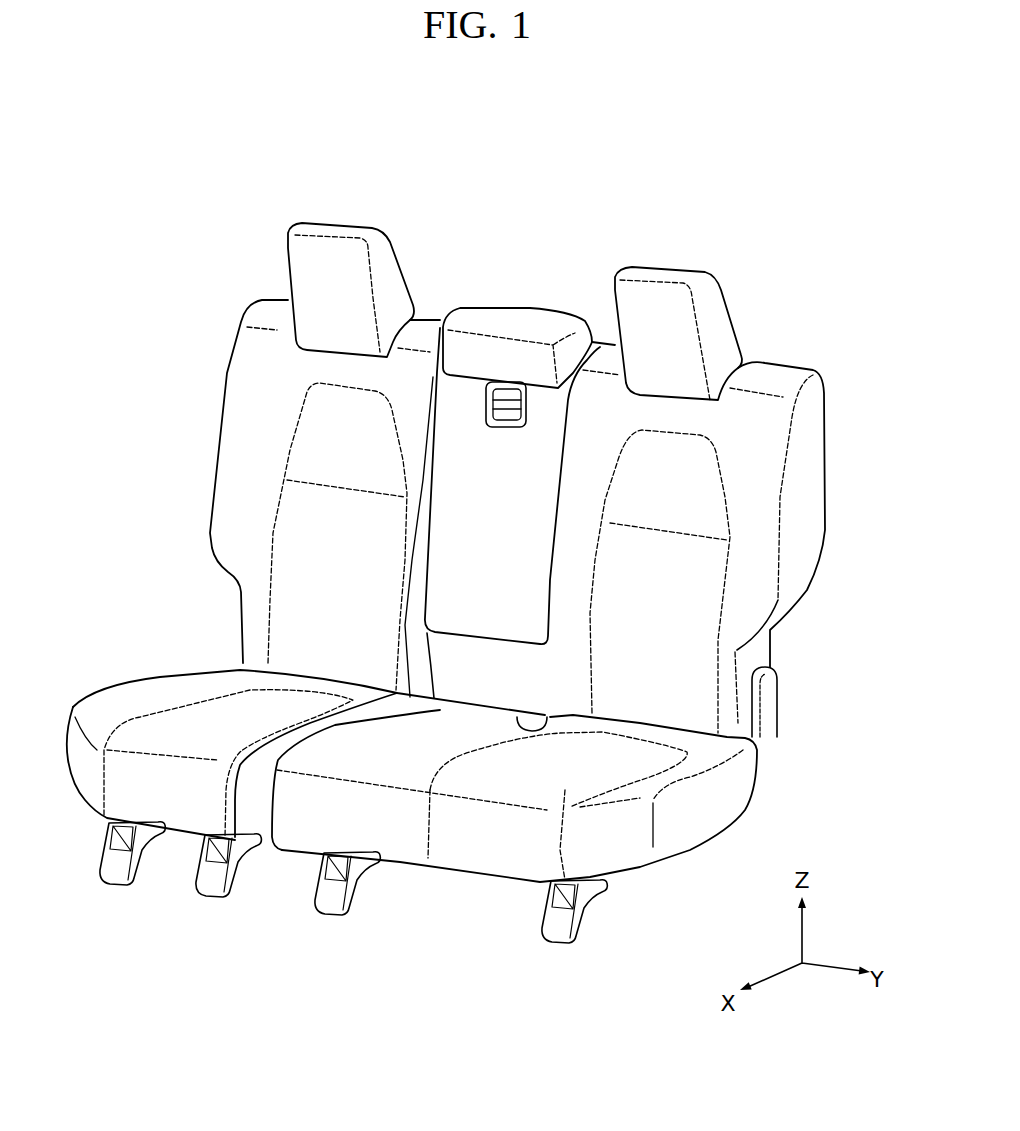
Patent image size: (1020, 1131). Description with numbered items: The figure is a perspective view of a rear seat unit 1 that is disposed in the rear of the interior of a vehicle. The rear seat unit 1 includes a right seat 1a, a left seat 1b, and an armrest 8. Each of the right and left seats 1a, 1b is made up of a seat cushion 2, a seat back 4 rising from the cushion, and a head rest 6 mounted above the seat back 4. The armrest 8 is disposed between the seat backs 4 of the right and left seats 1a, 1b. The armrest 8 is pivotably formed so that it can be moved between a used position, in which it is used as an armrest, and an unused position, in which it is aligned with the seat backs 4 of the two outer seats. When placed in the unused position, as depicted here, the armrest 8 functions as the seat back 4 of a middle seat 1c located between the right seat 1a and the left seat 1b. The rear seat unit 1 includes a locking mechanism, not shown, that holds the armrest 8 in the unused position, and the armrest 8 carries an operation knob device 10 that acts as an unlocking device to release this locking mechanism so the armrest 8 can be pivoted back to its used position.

The rear seat unit 1 is at (733, 172).
The right seat 1a is at (347, 207).
The left seat 1b is at (669, 248).
The middle seat 1c is at (518, 284).
The seat cushion 2 is at (150, 693).
The seat back 4 is at (247, 454).
The head rest 6 is at (300, 254).
The armrest 8 is at (541, 468).
The operation knob device 10 is at (483, 390).